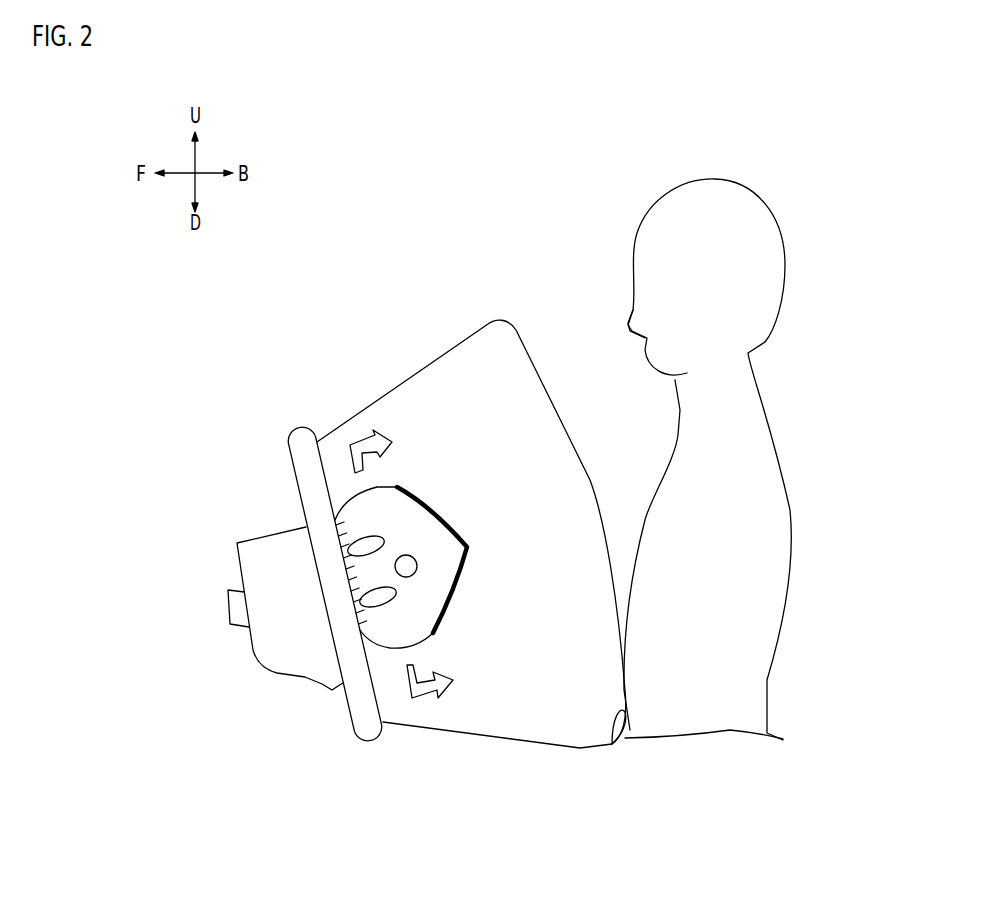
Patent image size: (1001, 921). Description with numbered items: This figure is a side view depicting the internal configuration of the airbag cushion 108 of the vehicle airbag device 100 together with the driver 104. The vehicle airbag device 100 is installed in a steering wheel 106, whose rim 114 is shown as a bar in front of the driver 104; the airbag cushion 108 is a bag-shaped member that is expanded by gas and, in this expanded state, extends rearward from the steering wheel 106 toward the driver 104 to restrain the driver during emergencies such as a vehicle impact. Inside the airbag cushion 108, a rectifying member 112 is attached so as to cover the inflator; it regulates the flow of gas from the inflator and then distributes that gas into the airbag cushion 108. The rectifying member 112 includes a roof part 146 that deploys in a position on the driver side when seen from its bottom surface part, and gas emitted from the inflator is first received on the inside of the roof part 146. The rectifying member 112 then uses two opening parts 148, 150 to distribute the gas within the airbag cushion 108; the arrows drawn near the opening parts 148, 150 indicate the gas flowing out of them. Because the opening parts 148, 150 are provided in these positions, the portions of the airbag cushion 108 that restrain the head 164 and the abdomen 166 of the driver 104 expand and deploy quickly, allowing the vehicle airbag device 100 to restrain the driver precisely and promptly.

The vehicle airbag device 100 is at (237, 388).
The driver 104 is at (686, 431).
The steering wheel 106 is at (270, 532).
The airbag cushion 108 is at (463, 337).
The rectifying member 112 is at (426, 564).
The rim 114 is at (302, 438).
The roof part 146 is at (445, 528).
The opening part 148 is at (423, 642).
The opening part 150 is at (383, 485).
The head 164 is at (638, 230).
The abdomen 166 is at (612, 746).